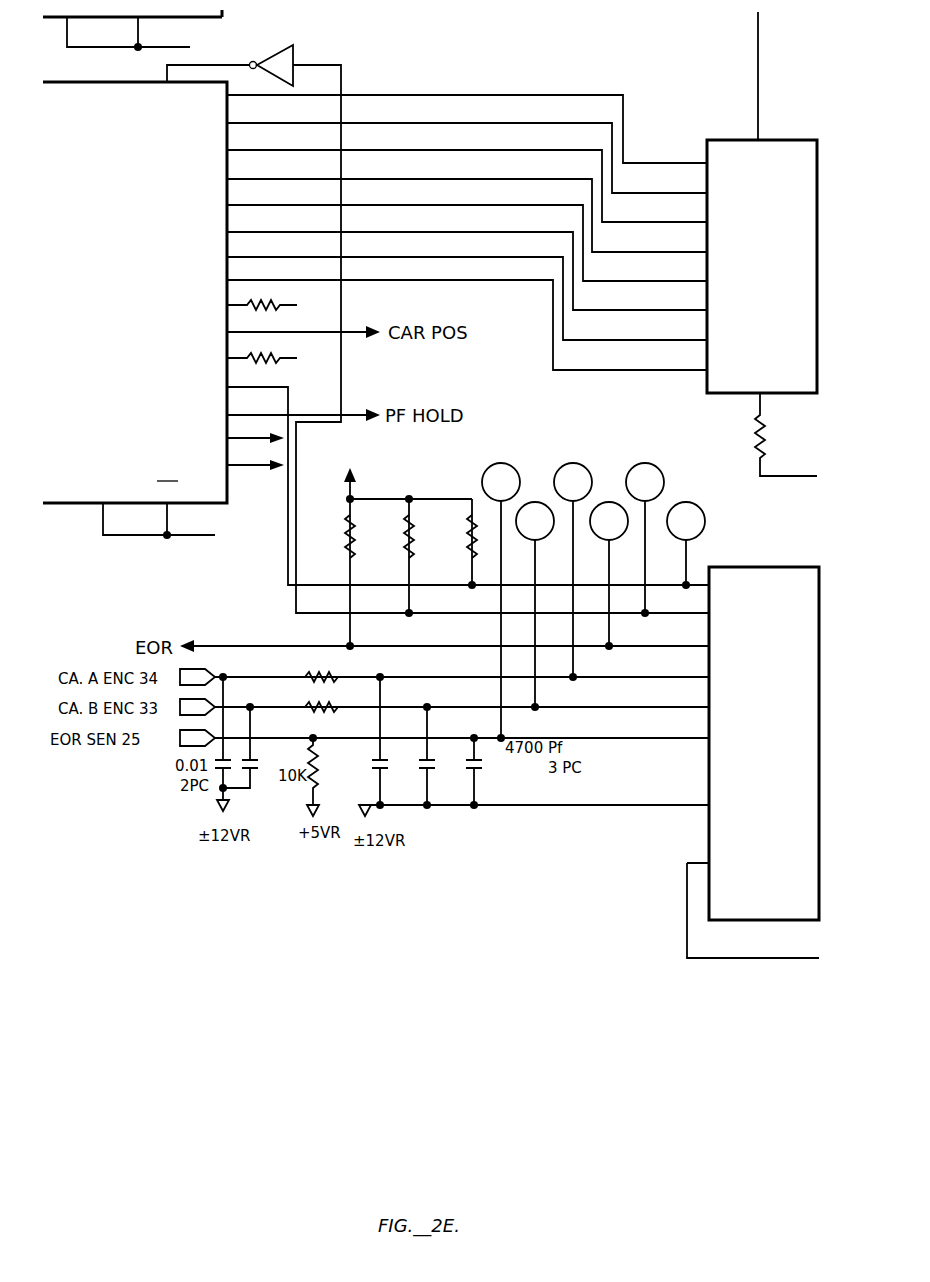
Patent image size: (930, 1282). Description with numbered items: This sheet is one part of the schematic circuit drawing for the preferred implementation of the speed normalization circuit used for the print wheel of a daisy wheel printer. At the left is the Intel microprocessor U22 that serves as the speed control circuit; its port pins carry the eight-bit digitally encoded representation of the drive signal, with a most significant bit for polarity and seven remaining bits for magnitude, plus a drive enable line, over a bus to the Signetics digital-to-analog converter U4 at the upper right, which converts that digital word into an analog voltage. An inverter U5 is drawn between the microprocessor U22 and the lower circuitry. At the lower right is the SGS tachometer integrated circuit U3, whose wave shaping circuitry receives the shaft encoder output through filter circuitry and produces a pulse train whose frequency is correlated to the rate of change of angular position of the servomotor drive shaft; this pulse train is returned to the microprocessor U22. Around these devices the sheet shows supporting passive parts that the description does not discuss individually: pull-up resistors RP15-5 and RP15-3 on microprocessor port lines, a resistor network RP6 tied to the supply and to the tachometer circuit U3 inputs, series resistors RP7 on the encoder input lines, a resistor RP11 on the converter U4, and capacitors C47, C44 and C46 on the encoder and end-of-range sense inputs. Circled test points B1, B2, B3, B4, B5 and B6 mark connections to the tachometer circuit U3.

The speed control circuit microprocessor U22 is at (169, 277).
The inverter U5 is at (438, 318).
The DAC U4 is at (742, 202).
The tachometer circuit U3 is at (753, 762).
The 10K pull-up resistors RP6 is at (393, 548).
The 1K resistors RP7 is at (321, 703).
The 6.8K resistor RP11 is at (779, 438).
The pull-up resistor RP15-5 is at (280, 300).
The pull-up resistor RP15-3 is at (280, 352).
The capacitor C47 is at (393, 741).
The capacitor C44 is at (439, 756).
The capacitor C46 is at (492, 771).
The test point B1 is at (573, 572).
The test point B2 is at (535, 606).
The test point B3 is at (501, 602).
The test point B4 is at (686, 545).
The test point B5 is at (645, 540).
The test point B6 is at (609, 576).